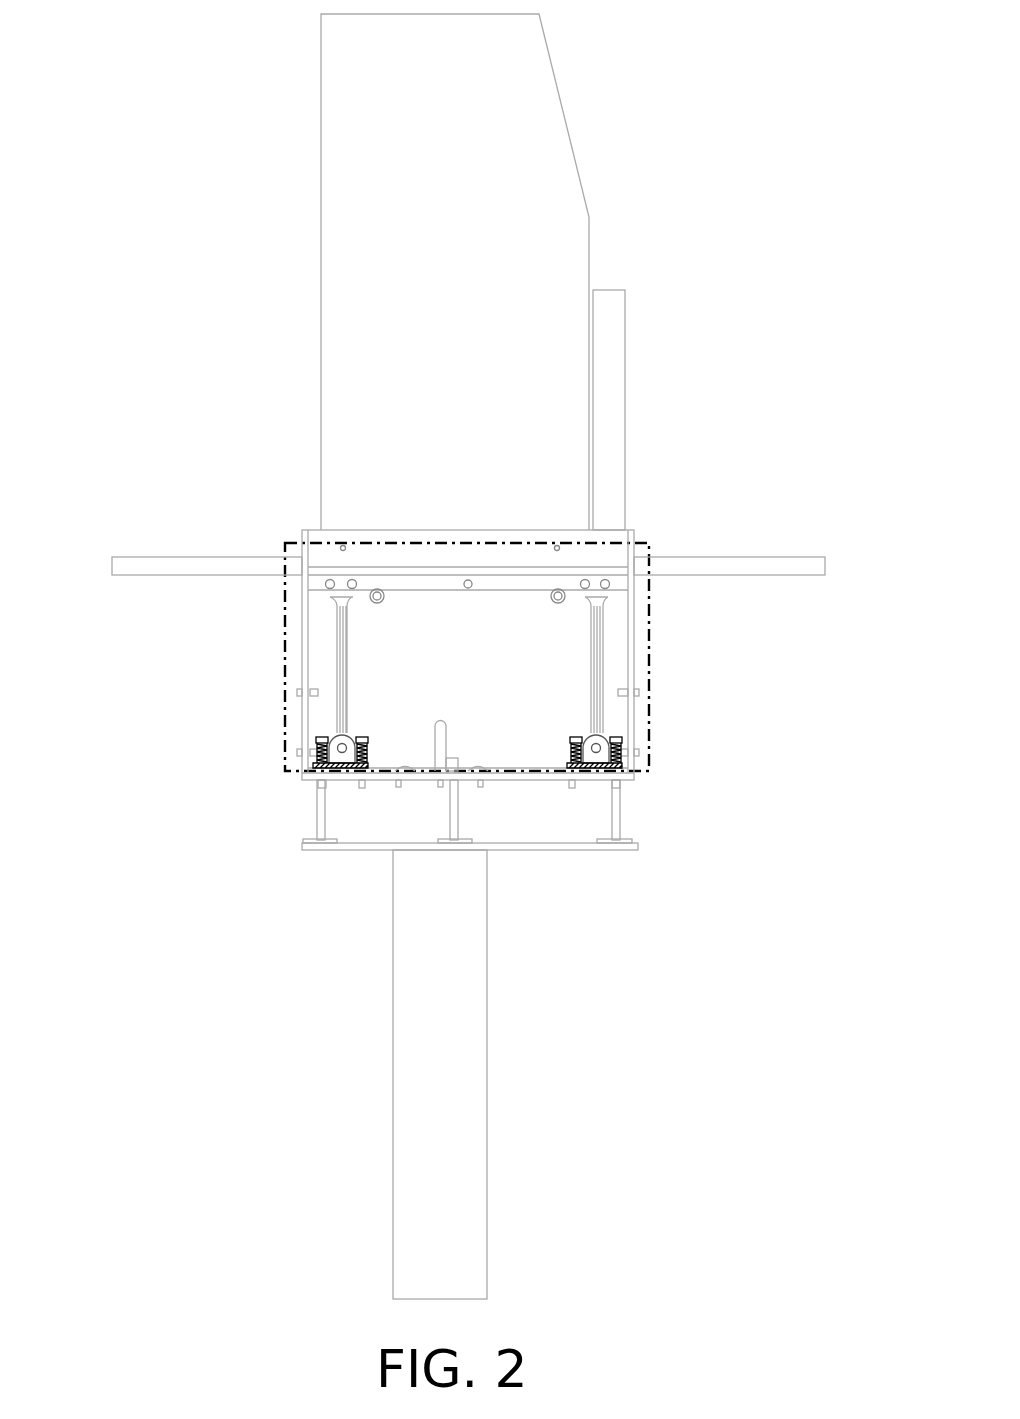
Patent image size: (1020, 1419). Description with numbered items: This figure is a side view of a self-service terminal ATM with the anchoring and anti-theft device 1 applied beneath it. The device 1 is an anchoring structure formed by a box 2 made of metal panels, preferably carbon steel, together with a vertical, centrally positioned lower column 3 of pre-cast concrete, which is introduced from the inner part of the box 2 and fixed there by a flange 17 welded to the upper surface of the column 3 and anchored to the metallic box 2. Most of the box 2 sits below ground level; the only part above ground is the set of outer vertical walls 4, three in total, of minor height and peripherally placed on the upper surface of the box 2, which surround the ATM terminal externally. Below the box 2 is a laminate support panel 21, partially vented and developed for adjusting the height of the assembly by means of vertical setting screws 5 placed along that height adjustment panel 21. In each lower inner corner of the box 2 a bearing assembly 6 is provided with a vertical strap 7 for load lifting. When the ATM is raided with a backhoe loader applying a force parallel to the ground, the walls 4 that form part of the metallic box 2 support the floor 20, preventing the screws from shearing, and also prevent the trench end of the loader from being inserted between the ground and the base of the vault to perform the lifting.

The self-service terminal ATM is at (416, 217).
The device for anchoring and protecting self-service terminals and vaults 1 is at (193, 807).
The box 2 is at (307, 630).
The lower column 3 is at (433, 1204).
The outer vertical walls 4 is at (388, 547).
The vertical setting screws 5 is at (323, 810).
The bearing assembly 6 is at (332, 733).
The vertical strap 7 is at (338, 608).
The flange 17 is at (467, 768).
The floor 20 is at (134, 558).
The laminate support panel 21 is at (320, 848).